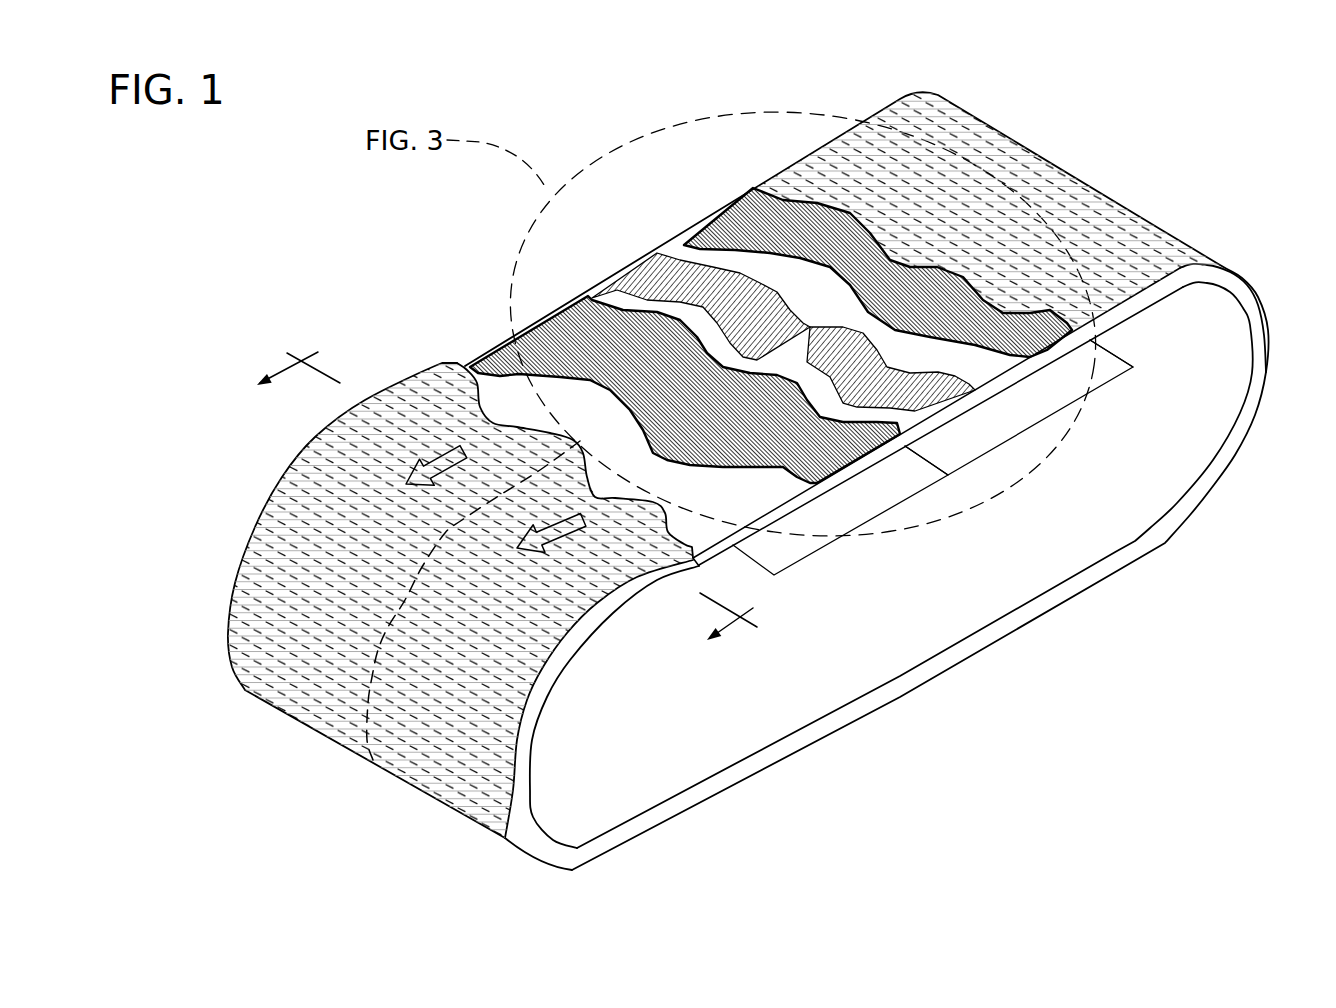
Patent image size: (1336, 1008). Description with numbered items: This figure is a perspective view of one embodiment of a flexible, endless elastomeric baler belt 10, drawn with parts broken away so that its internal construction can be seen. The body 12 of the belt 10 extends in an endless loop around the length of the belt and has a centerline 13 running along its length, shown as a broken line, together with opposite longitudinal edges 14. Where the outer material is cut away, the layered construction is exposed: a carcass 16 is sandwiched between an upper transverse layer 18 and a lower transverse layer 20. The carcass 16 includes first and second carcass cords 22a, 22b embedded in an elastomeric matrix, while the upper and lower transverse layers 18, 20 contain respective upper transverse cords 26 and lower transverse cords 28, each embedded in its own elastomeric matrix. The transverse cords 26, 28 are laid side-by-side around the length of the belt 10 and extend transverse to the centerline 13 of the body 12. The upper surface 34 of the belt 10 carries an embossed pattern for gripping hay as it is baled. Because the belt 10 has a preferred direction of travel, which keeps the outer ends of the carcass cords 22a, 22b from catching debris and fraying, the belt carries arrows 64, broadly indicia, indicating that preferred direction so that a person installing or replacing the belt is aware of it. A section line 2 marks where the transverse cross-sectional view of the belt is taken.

The baler belt 10 is at (1218, 140).
The body 12 is at (1186, 235).
The centerline 13 is at (373, 760).
The longitudinal edges 14 is at (280, 476).
The carcass 16 is at (982, 454).
The upper transverse layer 18 is at (1097, 386).
The lower transverse layer 20 is at (857, 523).
The first carcass cord 22a is at (750, 211).
The second carcass cord 22b is at (655, 250).
The upper transverse cords 26 is at (808, 327).
The lower transverse cords 28 is at (566, 335).
The upper surface 34 is at (988, 150).
The arrows 64 is at (452, 452).
The section line 2- 2 is at (517, 478).